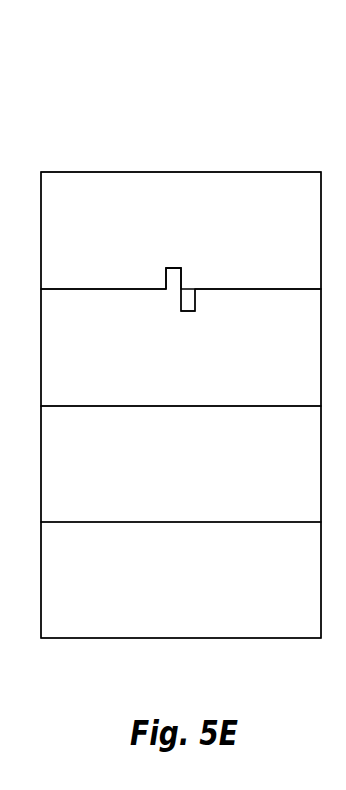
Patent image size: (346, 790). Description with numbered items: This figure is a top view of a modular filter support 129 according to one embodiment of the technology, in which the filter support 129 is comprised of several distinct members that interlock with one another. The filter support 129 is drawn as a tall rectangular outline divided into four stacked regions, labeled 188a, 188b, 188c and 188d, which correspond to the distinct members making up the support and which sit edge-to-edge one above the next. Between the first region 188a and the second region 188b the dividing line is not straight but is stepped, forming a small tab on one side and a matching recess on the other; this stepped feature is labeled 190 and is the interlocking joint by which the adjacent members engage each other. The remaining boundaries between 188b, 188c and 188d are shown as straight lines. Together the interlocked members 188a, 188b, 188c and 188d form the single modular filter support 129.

The filter support 129 is at (100, 98).
The first layer 188a is at (247, 221).
The second layer 188b is at (247, 373).
The third layer 188c is at (247, 478).
The fourth layer 188d is at (247, 593).
The protrusion / notch feature 190 is at (173, 300).